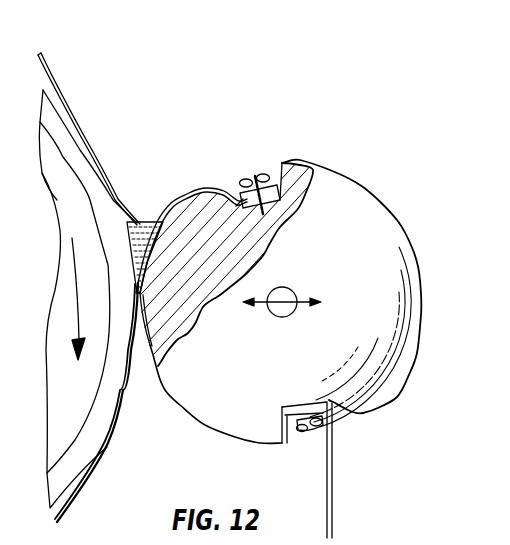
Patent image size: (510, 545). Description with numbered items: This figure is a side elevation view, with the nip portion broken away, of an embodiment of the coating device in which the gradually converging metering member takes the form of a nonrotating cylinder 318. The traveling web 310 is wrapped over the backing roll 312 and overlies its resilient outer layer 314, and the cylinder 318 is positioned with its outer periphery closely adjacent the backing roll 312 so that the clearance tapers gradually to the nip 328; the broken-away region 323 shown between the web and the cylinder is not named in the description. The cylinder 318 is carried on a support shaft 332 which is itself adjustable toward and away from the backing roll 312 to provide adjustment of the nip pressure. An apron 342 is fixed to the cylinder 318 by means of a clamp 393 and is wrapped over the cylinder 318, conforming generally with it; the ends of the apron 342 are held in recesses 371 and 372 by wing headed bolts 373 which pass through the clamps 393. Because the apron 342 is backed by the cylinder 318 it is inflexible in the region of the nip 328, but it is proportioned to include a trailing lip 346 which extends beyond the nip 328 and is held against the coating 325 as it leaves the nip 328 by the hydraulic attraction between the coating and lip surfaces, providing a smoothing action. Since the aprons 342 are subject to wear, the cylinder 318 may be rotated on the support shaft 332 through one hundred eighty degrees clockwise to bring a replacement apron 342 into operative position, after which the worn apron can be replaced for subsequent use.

The traveling web 310 is at (50, 73).
The resilient outer layer 314 is at (62, 130).
The backing roll 312 is at (57, 181).
The nip region 323 is at (128, 222).
The apron 342 is at (167, 218).
The wing headed bolt 373 is at (251, 183).
The clamp 393 is at (277, 184).
The recess 371 is at (284, 161).
The cylinder 318 is at (368, 227).
The support shaft 332 is at (288, 288).
The nip 328 is at (143, 313).
The trailing lip 346 is at (137, 342).
The coating 325 is at (105, 447).
The recess 372 is at (297, 430).